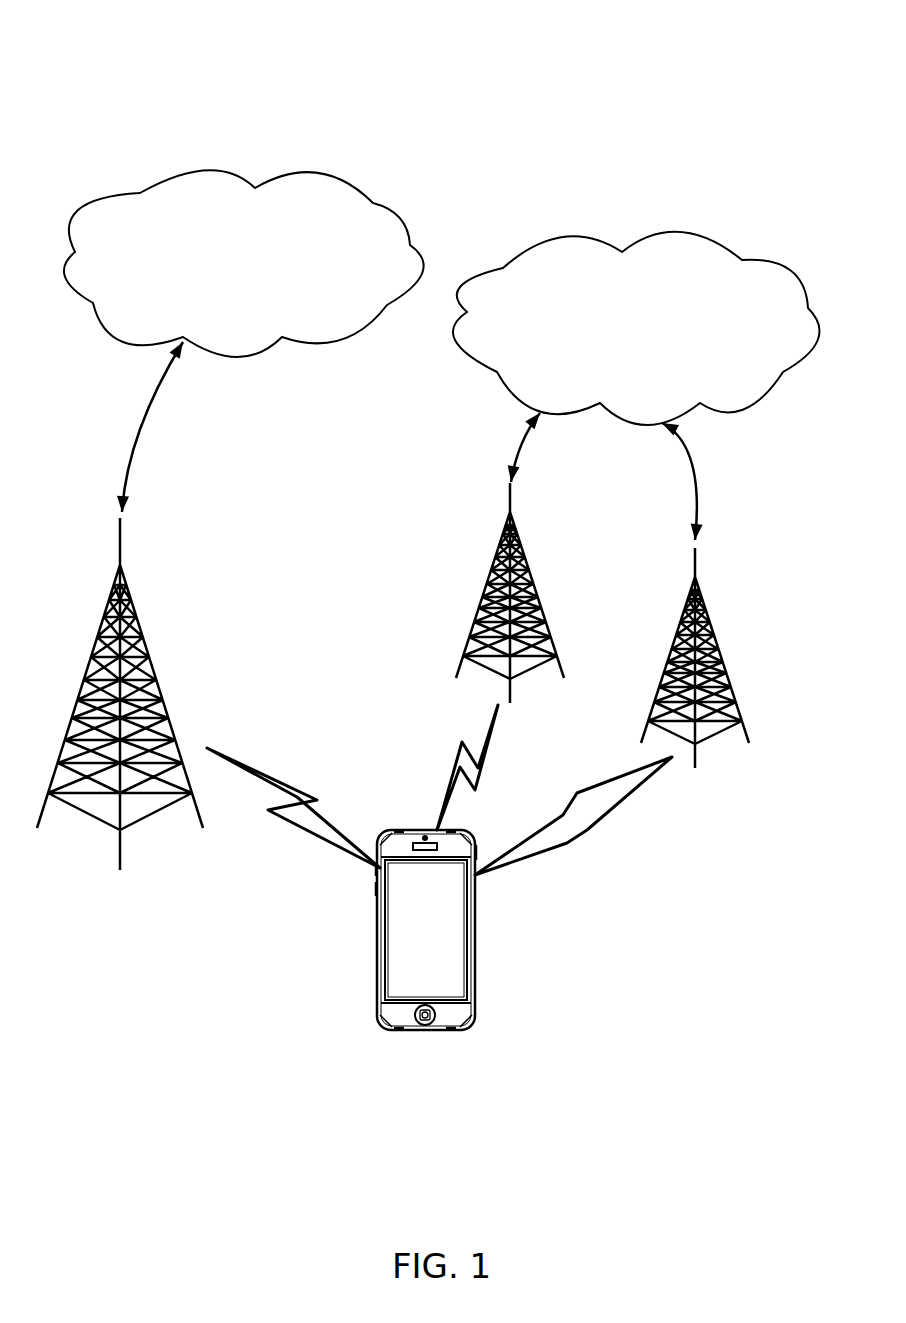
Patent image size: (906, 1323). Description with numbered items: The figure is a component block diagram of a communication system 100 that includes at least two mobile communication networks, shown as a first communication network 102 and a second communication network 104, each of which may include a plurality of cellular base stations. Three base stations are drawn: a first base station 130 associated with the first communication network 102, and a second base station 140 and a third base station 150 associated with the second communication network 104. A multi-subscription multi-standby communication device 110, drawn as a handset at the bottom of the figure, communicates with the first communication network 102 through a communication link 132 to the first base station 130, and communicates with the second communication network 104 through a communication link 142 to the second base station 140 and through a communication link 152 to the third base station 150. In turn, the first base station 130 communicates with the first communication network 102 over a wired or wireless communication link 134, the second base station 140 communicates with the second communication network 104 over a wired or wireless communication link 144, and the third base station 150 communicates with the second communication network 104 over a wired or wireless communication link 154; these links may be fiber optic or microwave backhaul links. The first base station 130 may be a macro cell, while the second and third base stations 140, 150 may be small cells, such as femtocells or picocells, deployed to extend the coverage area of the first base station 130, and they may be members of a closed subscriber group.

The communication system 100 is at (126, 70).
The first communication network 102 is at (278, 173).
The second communication network 104 is at (713, 233).
The multi-subscription multi-standby communication device 110 is at (475, 970).
The first base station 130 is at (103, 618).
The communication link 132 is at (272, 775).
The wired or wireless communication link 134 is at (140, 412).
The second base station 140 is at (495, 573).
The communication link 142 is at (488, 752).
The wired or wireless communication link 144 is at (528, 443).
The third base station 150 is at (687, 600).
The communication link 152 is at (585, 830).
The wired or wireless communication link 154 is at (693, 482).